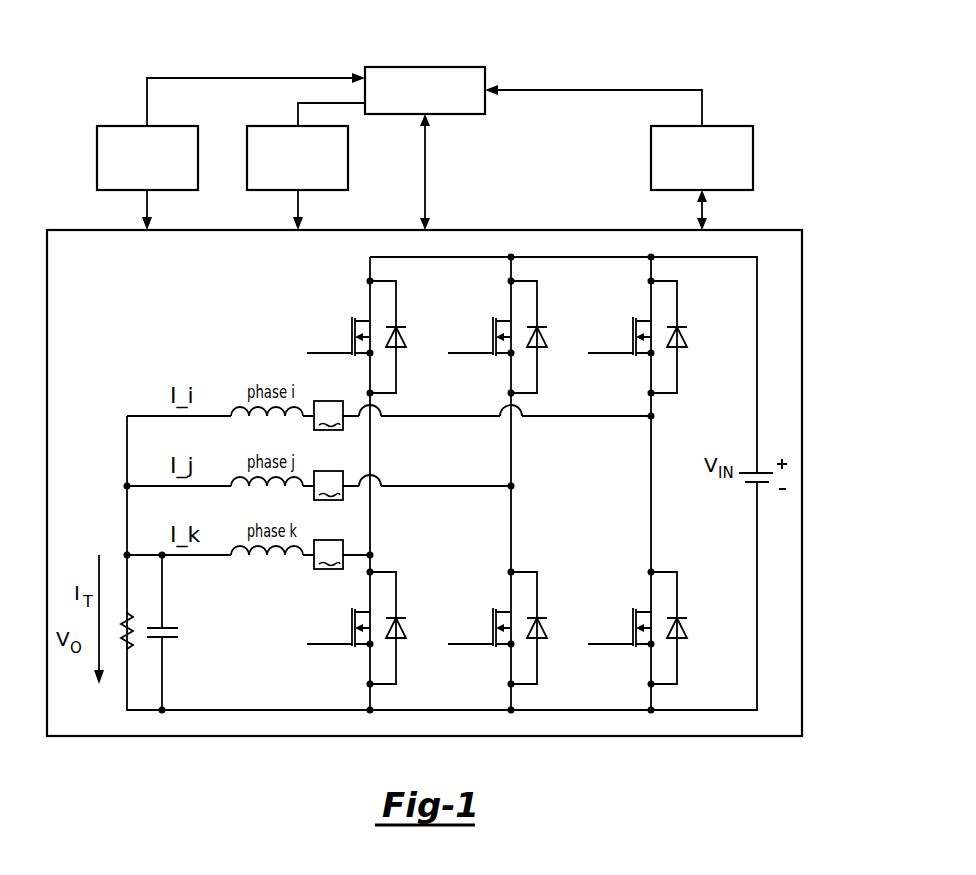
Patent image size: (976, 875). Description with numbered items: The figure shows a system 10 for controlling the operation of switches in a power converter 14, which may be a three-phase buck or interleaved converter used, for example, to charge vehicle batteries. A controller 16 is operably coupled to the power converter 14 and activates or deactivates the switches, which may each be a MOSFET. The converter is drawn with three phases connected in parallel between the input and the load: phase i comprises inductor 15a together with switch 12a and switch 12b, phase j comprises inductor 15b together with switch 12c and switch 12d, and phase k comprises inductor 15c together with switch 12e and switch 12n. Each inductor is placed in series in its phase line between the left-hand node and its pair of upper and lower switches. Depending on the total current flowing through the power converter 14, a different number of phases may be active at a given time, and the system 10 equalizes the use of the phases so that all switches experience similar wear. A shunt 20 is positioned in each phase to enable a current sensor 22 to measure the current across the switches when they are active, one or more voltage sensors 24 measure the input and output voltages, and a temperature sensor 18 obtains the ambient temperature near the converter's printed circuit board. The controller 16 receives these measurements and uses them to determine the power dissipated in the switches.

The system 10 is at (646, 63).
The switch 12a is at (633, 320).
The switch 12b is at (633, 611).
The switch 12c is at (493, 320).
The switch 12d is at (493, 611).
The switch 12e is at (352, 320).
The switch 12n is at (352, 611).
The power converter 14 is at (580, 230).
The inductor 15a is at (241, 404).
The inductor 15b is at (241, 474).
The inductor 15c is at (241, 544).
The controller 16 is at (425, 67).
The temperature sensor 18 is at (728, 126).
The shunt 20 is at (328, 485).
The current sensor 22 is at (273, 126).
The voltage sensor 24 is at (123, 126).